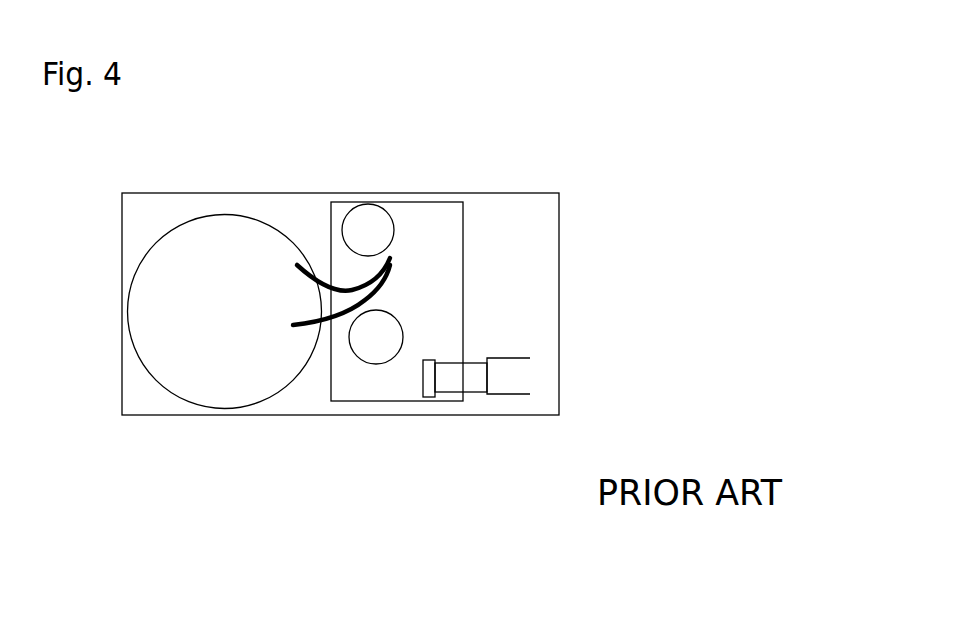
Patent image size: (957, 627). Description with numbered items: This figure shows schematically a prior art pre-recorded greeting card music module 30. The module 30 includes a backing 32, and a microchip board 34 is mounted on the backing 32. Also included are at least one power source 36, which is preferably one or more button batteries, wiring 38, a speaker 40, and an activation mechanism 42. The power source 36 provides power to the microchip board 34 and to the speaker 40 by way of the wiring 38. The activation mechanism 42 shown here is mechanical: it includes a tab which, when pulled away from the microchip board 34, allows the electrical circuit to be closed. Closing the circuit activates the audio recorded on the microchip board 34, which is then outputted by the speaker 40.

The pre-recorded greeting card music module 30 is at (637, 229).
The backing 32 is at (517, 207).
The microchip board 34 is at (396, 382).
The power source 36 is at (384, 338).
The wiring 38 is at (365, 307).
The speaker 40 is at (191, 342).
The activation mechanism 42 is at (458, 379).